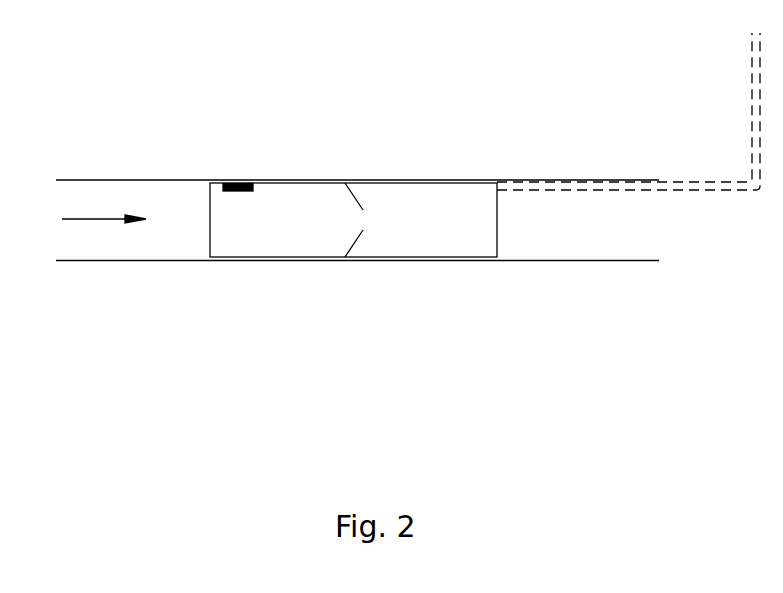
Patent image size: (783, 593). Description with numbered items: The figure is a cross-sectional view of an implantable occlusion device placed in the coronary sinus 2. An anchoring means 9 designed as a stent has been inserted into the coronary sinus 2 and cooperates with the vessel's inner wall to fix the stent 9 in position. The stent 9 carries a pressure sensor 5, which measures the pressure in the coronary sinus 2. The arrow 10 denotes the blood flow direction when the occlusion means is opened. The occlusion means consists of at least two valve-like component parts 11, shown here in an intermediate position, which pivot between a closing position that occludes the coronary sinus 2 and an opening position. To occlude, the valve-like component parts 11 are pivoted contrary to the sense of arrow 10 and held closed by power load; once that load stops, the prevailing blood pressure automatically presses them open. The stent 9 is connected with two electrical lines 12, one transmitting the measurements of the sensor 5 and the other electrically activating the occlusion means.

The coronary sinus 2 is at (128, 261).
The pressure sensor 5 is at (232, 182).
The anchoring means 9 is at (210, 257).
The blood flow direction 10 is at (95, 216).
The valve-like component parts 11 is at (352, 192).
The electrical lines 12 is at (717, 190).